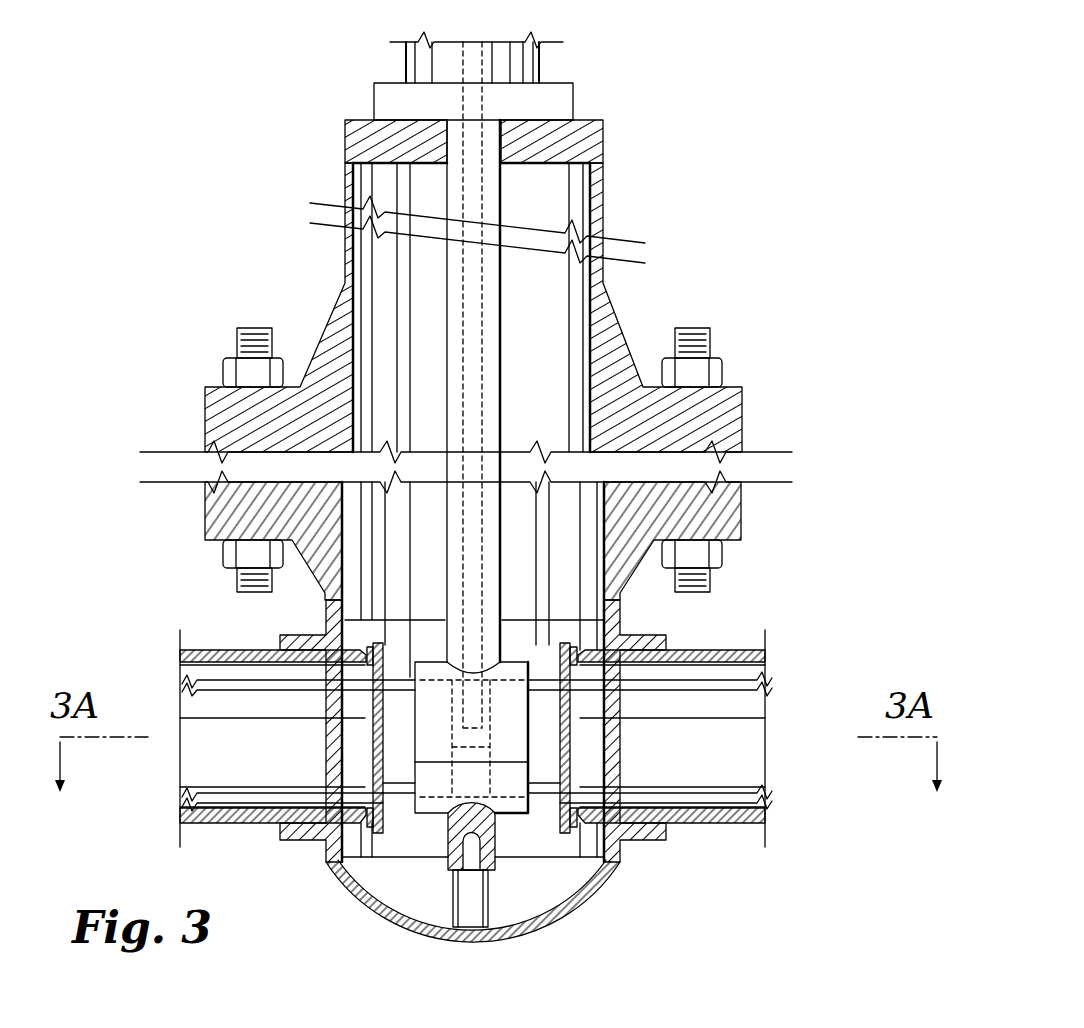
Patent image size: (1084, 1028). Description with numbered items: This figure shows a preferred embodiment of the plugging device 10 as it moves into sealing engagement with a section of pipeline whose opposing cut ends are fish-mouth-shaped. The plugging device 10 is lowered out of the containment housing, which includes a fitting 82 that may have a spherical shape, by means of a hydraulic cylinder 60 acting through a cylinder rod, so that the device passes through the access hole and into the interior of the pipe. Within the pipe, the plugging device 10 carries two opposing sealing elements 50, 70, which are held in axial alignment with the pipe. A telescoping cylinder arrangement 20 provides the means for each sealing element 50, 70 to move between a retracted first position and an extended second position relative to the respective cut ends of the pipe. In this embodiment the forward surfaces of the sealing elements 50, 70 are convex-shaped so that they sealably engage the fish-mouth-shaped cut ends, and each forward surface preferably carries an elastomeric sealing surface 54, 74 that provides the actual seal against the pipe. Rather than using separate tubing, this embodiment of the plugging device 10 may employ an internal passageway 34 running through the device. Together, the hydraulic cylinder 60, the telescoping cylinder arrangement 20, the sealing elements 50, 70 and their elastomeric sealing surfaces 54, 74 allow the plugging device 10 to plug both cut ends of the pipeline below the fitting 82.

The plugging device 10 is at (672, 633).
The telescoping cylinder arrangement 20 is at (398, 838).
The internal passageway 34 is at (473, 333).
The sealing element 50 is at (397, 675).
The elastomeric sealing surface 54 is at (369, 810).
The hydraulic cylinder 60 is at (533, 65).
The sealing element 70 is at (548, 675).
The elastomeric sealing surface 74 is at (575, 808).
The fitting 82 is at (598, 893).